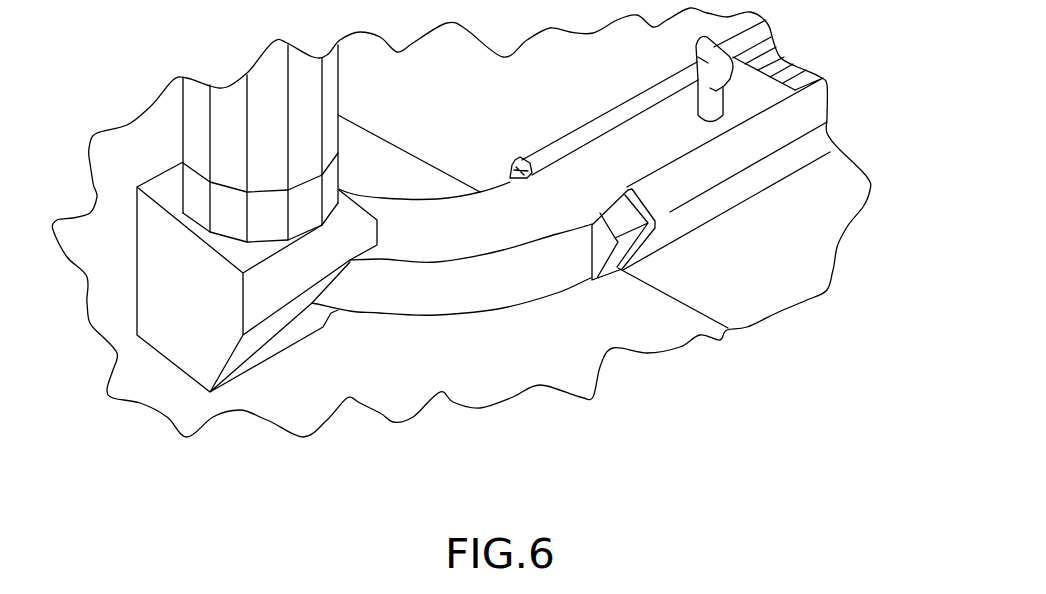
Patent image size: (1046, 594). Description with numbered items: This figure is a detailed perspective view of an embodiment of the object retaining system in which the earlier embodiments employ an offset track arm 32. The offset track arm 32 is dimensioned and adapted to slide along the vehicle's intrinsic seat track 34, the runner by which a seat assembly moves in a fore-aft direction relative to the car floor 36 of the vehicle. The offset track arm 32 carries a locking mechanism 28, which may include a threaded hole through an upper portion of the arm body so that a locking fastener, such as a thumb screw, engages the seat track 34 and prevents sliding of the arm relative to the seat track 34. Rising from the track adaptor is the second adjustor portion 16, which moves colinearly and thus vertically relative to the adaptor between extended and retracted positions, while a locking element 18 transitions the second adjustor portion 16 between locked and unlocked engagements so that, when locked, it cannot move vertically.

The second adjustor portion 16 is at (335, 68).
The locking element 18 is at (339, 183).
The locking mechanism 28 is at (693, 57).
The offset track arm 32 is at (505, 282).
The seat track 34 is at (700, 208).
The car floor 36 is at (733, 307).